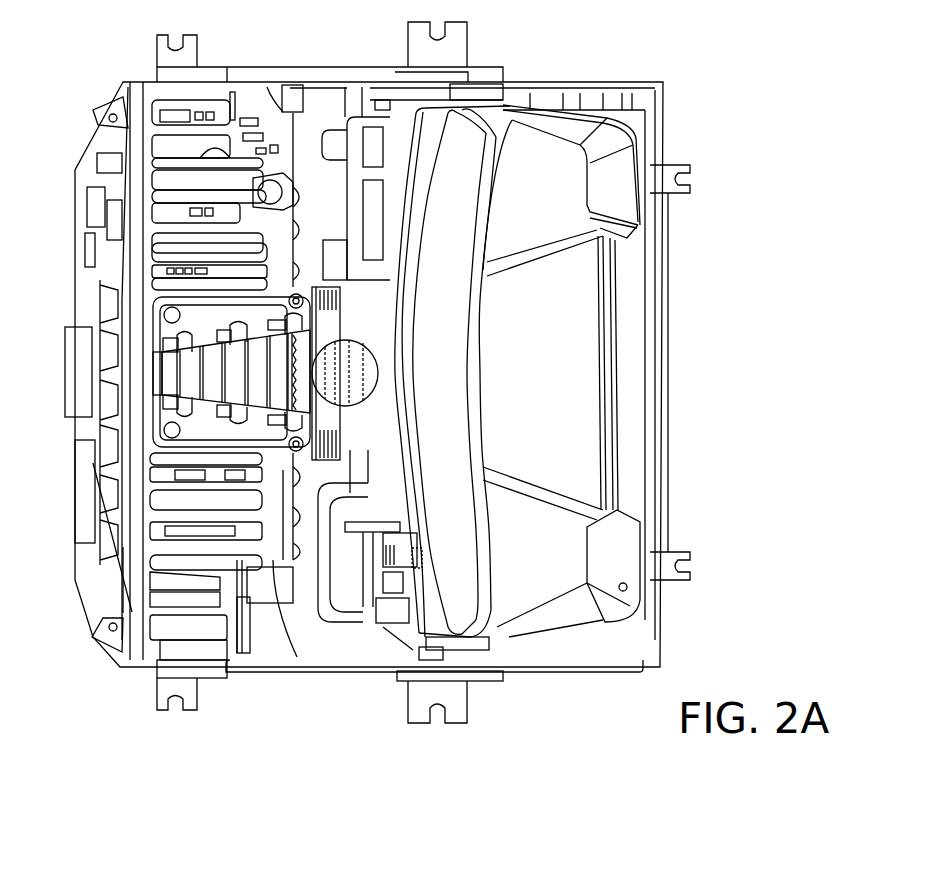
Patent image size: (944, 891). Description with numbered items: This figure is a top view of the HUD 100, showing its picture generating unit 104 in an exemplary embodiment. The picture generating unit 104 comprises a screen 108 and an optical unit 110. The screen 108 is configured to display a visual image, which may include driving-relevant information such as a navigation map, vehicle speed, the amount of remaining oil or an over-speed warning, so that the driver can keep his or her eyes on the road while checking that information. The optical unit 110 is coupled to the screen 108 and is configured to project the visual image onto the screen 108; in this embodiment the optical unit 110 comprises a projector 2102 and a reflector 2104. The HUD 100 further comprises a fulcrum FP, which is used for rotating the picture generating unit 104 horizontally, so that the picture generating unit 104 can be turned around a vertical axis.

The HUD 100 is at (74, 23).
The picture generating unit 104 is at (785, 267).
The optical unit 110 is at (738, 266).
The reflector 2104 is at (633, 272).
The projector 2102 is at (330, 330).
The screen 108 is at (440, 353).
The fulcrum FP is at (370, 390).